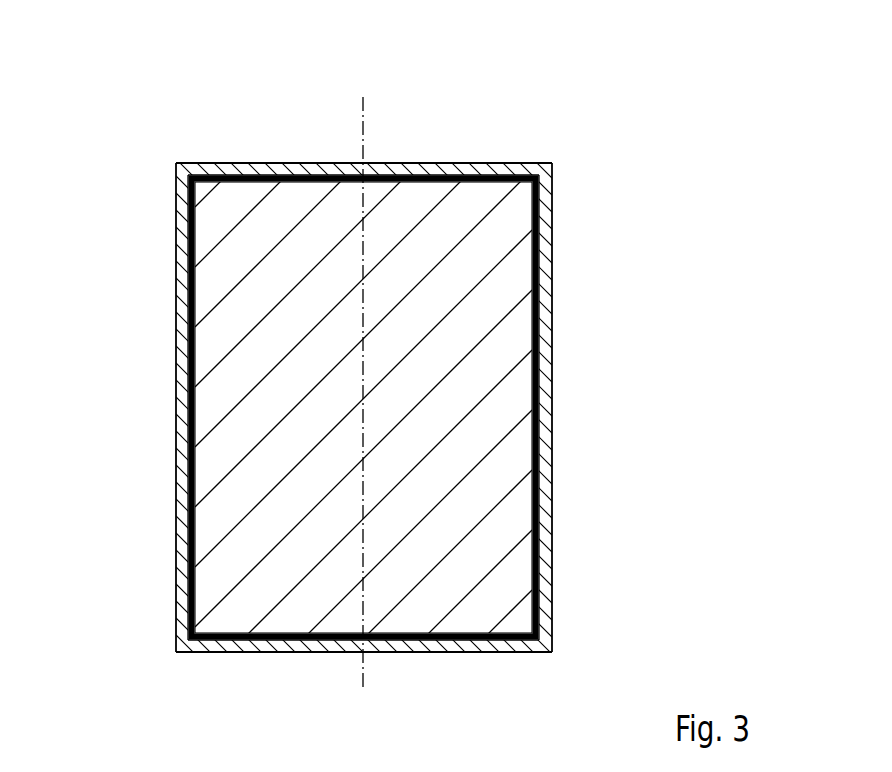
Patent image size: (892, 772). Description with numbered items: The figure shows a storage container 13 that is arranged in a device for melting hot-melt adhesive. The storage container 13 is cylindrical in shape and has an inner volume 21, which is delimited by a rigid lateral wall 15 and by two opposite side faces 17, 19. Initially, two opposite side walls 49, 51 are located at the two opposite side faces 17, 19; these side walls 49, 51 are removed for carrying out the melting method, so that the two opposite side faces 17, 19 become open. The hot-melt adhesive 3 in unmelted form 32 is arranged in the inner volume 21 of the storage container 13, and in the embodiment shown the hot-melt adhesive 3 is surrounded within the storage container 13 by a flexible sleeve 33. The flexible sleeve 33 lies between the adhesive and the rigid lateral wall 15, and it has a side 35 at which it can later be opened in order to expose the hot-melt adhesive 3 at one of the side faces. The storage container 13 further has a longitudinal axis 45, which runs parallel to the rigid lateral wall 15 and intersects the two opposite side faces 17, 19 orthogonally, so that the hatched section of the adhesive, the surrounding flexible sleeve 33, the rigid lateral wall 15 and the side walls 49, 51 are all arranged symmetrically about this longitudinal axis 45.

The storage container 13 is at (151, 113).
The rigid lateral wall 15 is at (562, 436).
The side face 17 is at (472, 653).
The side face 19 is at (472, 165).
The inner volume 21 is at (498, 290).
The hot-melt adhesive 3 is at (490, 335).
The unmelted form 32 is at (363, 407).
The flexible sleeve 33 is at (551, 498).
The side of the flexible sleeve 35 is at (242, 165).
The longitudinal axis 45 is at (365, 117).
The side wall 49 is at (315, 642).
The side wall 51 is at (313, 165).